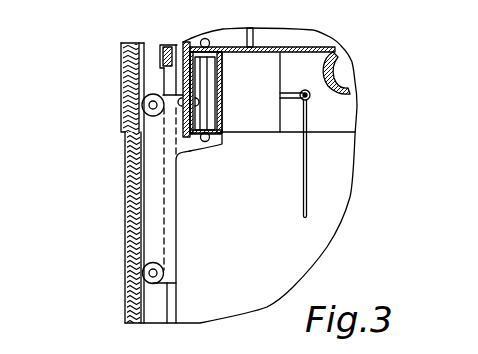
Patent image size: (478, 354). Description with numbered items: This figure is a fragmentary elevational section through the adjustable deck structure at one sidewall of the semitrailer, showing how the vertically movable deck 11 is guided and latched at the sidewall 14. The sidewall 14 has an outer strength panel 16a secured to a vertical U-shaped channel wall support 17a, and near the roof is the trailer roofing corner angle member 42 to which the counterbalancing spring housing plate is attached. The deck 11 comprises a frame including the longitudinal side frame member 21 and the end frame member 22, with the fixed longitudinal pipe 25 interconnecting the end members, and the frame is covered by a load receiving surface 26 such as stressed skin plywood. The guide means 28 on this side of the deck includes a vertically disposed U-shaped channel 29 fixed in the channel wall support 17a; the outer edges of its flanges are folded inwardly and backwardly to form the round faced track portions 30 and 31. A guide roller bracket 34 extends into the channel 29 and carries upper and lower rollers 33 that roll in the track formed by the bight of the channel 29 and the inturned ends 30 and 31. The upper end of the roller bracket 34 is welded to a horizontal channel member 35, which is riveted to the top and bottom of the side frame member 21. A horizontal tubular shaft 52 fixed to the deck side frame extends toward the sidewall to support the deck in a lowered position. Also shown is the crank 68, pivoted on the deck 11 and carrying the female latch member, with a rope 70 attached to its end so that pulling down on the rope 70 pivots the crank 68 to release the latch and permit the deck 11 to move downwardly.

The vertically movable deck 11 is at (340, 140).
The sidewall 14 is at (127, 203).
The outer strength panel 16a is at (130, 253).
The channel wall support 17a is at (130, 166).
The longitudinal side frame member 21 is at (222, 67).
The end frame member 22 is at (343, 117).
The longitudinal pipe 25 is at (352, 98).
The load receiving surface 26 is at (315, 48).
The guide means 28 is at (193, 163).
The U-shaped channel 29 is at (142, 52).
The track portion 30 is at (172, 70).
The track portion 31 is at (263, 27).
The roller 33 is at (147, 106).
The guide roller bracket 34 is at (176, 228).
The horizontal channel member 35 is at (223, 144).
The trailer roofing corner angle member 42 is at (118, 48).
The horizontal tubular shaft 52 is at (476, 96).
The crank 68 is at (297, 100).
The rope 70 is at (303, 172).